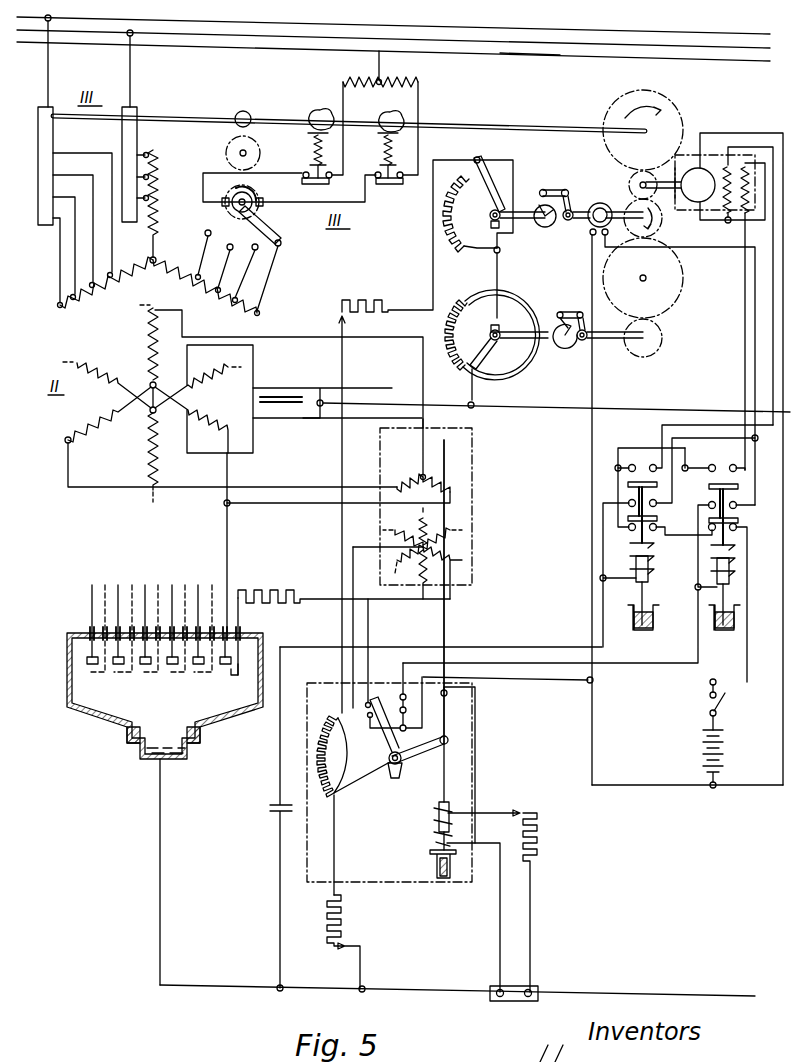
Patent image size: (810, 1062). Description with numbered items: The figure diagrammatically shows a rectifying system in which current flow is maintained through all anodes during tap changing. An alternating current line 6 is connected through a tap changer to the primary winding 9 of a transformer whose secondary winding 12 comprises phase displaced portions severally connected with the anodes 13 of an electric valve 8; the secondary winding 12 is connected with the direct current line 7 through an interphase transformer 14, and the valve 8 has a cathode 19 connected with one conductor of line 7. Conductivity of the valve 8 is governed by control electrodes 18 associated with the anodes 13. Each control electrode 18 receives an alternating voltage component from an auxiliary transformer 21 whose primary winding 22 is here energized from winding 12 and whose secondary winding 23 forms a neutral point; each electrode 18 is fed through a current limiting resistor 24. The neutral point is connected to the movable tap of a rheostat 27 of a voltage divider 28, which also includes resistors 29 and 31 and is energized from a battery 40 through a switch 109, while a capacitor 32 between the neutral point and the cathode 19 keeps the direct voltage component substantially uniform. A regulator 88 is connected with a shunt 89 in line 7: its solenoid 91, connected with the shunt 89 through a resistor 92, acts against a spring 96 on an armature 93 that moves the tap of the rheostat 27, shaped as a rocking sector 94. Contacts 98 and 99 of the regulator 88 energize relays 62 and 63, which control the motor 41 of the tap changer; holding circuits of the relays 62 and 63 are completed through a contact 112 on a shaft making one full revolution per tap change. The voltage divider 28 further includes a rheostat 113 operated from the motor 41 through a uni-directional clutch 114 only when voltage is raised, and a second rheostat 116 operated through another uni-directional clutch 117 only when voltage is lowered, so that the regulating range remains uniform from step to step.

The alternating current line 6 is at (532, 47).
The direct current line 7 is at (648, 407).
The electric valve 8 is at (100, 710).
The primary winding 9 is at (226, 302).
The secondary winding 12 is at (147, 328).
The anodes 13 is at (220, 668).
The interphase transformer 14 is at (272, 382).
The control electrodes 18 is at (236, 670).
The cathode 19 is at (150, 756).
The auxiliary transformer 21 is at (473, 478).
The primary winding of auxiliary transformer 22 is at (427, 447).
The secondary winding of auxiliary transformer 23 is at (462, 553).
The current limiting resistor 24 is at (272, 590).
The rheostat 27 is at (335, 714).
The voltage divider 28 is at (347, 372).
The resistor 29 is at (340, 922).
The resistor 31 is at (362, 304).
The capacitor 32 is at (272, 810).
The battery 40 is at (727, 758).
The motor 41 is at (690, 216).
The relay 62 is at (630, 560).
The relay 63 is at (735, 568).
The regulator 88 is at (392, 878).
The shunt 89 is at (533, 988).
The solenoid 91 is at (432, 834).
The resistor 92 is at (539, 824).
The armature 93 is at (437, 800).
The rocking sector 94 is at (347, 780).
The spring 96 is at (450, 722).
The contact 98 is at (370, 718).
The contact 99 is at (395, 688).
The switch 109 is at (725, 698).
The contact 112 is at (598, 204).
The rheostat 113 is at (476, 250).
The uni-directional clutch 114 is at (547, 226).
The rheostat 116 is at (456, 333).
The uni-directional clutch 117 is at (566, 347).